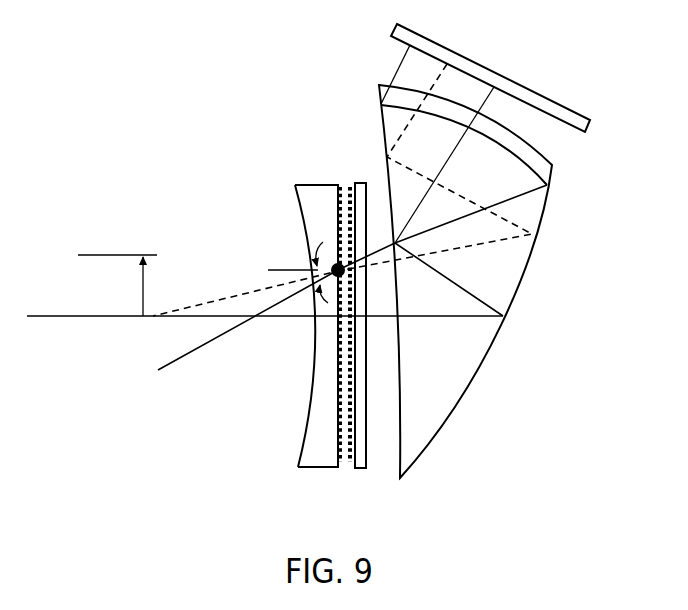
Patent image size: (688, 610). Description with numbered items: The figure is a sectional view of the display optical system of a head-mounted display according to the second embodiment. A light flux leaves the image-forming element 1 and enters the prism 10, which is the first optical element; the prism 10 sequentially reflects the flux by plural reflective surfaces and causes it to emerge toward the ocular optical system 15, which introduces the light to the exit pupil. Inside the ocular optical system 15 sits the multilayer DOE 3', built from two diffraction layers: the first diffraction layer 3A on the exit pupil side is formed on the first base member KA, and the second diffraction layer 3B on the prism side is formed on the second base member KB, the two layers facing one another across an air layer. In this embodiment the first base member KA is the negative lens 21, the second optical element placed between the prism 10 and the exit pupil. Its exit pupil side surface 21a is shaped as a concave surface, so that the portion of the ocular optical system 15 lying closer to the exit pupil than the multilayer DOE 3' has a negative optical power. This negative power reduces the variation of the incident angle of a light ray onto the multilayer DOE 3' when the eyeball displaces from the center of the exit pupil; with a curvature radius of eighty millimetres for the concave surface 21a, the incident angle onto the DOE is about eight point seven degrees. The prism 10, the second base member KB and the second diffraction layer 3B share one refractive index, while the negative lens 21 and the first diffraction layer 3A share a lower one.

The image-forming element 1 is at (497, 72).
The prism 10 is at (455, 370).
The ocular optical system 15 is at (368, 172).
The negative lens 21 is at (284, 355).
The exit pupil side surface 21a is at (309, 399).
The multilayer DOE 3' is at (255, 297).
The first diffraction layer 3A is at (336, 207).
The second diffraction layer 3B is at (349, 236).
The second base member KB is at (362, 450).
The point P is at (332, 258).
The height y is at (117, 285).